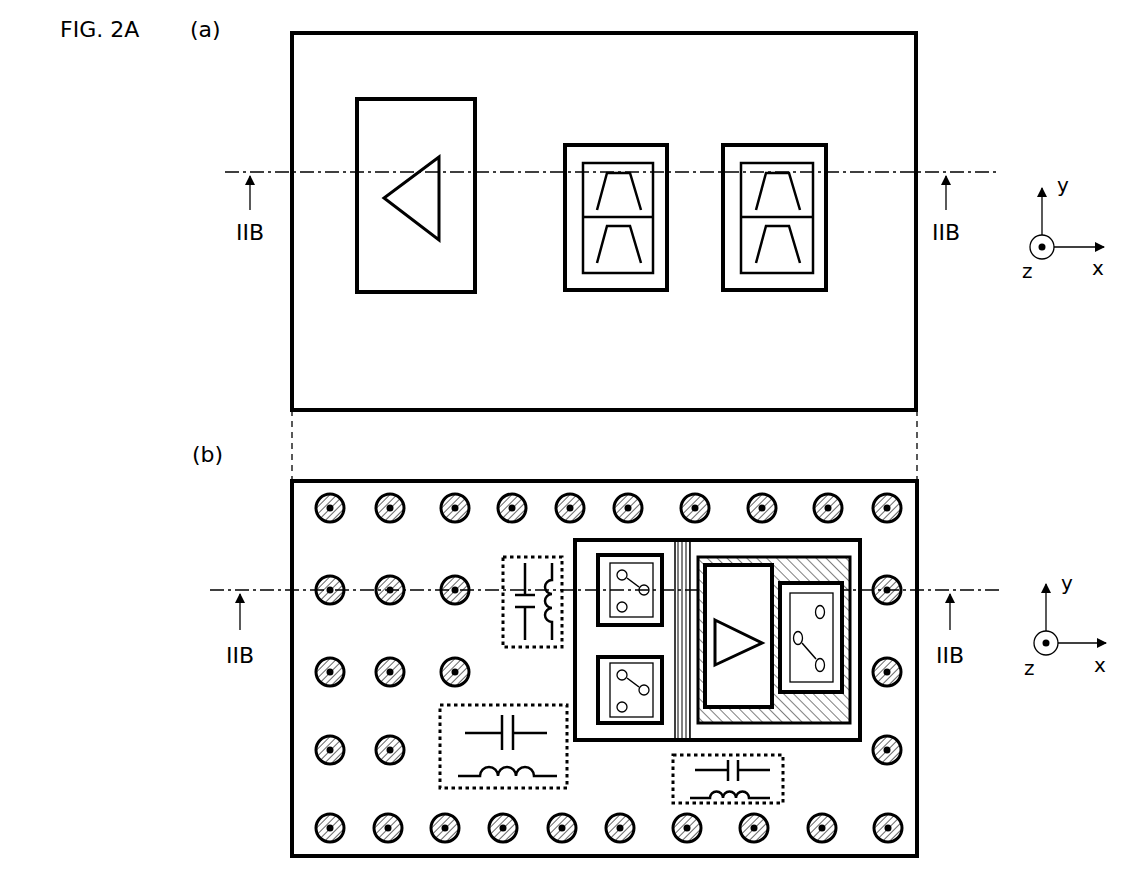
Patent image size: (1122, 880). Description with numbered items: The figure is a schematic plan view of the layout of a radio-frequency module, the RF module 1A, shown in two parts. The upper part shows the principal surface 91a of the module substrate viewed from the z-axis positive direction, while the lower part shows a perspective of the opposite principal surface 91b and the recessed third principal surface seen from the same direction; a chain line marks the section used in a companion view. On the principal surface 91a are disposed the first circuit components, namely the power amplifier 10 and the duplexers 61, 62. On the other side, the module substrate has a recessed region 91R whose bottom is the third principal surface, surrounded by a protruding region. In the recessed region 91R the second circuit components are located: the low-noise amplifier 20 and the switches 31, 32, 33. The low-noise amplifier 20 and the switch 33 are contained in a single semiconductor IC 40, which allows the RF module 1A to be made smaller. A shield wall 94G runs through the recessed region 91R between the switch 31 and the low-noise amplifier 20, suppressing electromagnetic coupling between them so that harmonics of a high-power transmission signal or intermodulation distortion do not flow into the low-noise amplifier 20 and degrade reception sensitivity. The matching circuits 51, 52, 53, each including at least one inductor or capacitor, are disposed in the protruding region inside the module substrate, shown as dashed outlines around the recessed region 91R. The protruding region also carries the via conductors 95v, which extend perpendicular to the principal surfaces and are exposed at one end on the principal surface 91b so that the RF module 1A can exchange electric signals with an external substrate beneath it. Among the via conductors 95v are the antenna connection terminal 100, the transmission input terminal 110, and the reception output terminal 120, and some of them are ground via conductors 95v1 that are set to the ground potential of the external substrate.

The RF module 1A is at (1016, 34).
The principal surface 91a is at (907, 83).
The principal surface 91b is at (908, 532).
The recessed region 91R is at (817, 741).
The power amplifier 10 is at (458, 98).
The duplexer 61 is at (632, 145).
The duplexer 62 is at (767, 145).
The low-noise amplifier 20 is at (732, 568).
The switch 31 is at (635, 709).
The switch 32 is at (620, 565).
The semiconductor IC 40 is at (800, 568).
The switch 33 is at (808, 692).
The matching circuit 51 is at (567, 774).
The matching circuit 52 is at (545, 557).
The matching circuit 53 is at (785, 786).
The shield wall 94G is at (679, 718).
The via conductor 95v is at (318, 678).
The ground via conductor 95v1 is at (383, 585).
The antenna connection terminal 100 is at (900, 752).
The transmission input terminal 110 is at (393, 510).
The reception output terminal 120 is at (830, 508).